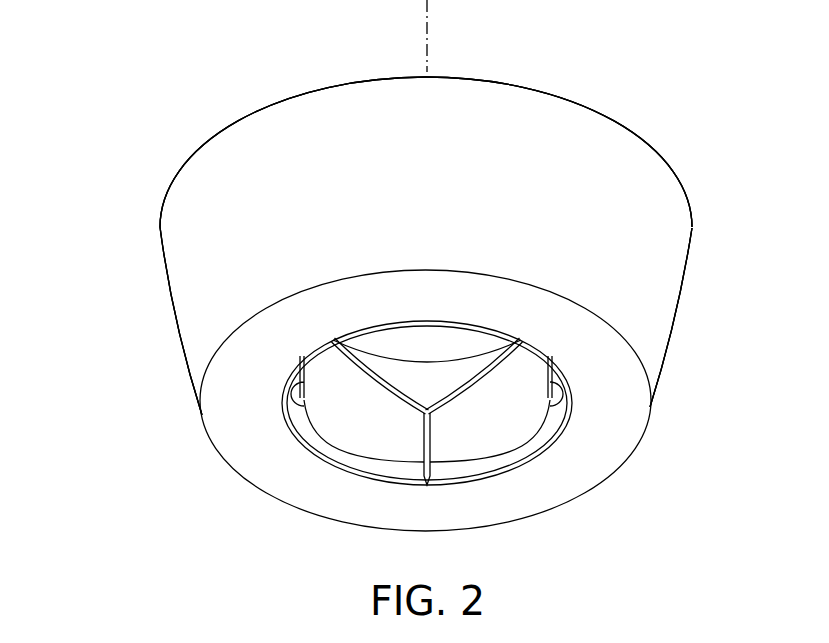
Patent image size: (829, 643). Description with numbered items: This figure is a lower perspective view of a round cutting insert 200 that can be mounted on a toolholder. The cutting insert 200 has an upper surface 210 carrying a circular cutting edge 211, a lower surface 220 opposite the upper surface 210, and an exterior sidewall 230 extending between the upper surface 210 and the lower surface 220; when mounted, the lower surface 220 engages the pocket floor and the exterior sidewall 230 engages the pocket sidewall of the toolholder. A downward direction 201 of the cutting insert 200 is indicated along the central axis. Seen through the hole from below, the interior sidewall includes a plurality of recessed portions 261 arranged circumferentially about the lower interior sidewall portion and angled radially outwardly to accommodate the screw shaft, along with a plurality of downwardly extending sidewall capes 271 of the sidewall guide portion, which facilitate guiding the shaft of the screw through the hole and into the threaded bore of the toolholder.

The cutting insert 200 is at (128, 131).
The downward direction 201 is at (389, 64).
The upper surface 210 is at (663, 137).
The circular cutting edge 211 is at (586, 102).
The lower surface 220 is at (618, 445).
The exterior sidewall 230 is at (668, 263).
The recessed portions 261 is at (318, 358).
The downwardly extending sidewall capes 271 is at (430, 378).